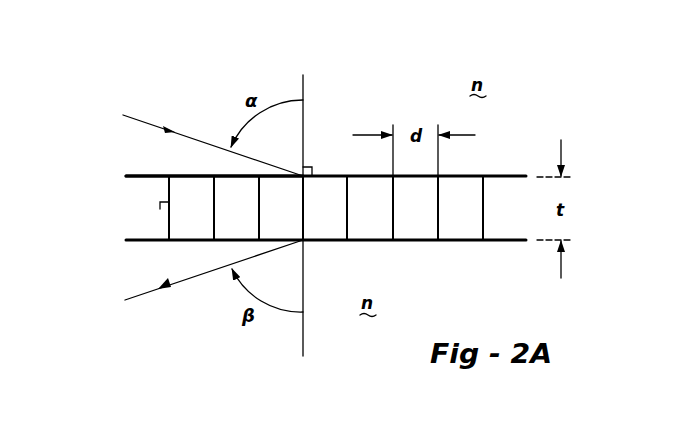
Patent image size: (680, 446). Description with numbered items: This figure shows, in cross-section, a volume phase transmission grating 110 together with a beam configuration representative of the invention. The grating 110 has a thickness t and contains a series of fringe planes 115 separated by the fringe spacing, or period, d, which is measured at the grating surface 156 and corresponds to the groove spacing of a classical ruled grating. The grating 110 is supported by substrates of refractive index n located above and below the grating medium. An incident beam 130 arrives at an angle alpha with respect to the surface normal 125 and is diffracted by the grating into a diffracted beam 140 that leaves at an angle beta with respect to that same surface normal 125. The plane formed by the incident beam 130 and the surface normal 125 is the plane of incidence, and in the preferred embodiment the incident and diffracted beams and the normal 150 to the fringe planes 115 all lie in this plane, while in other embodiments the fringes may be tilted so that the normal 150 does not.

The grating 110 is at (586, 190).
The fringe planes 115 is at (347, 230).
The surface normal 125 is at (305, 204).
The incident beam 130 is at (194, 138).
The diffracted beam 140 is at (193, 277).
The normal to the fringe planes 150 is at (188, 209).
The grating surface 156 is at (188, 176).